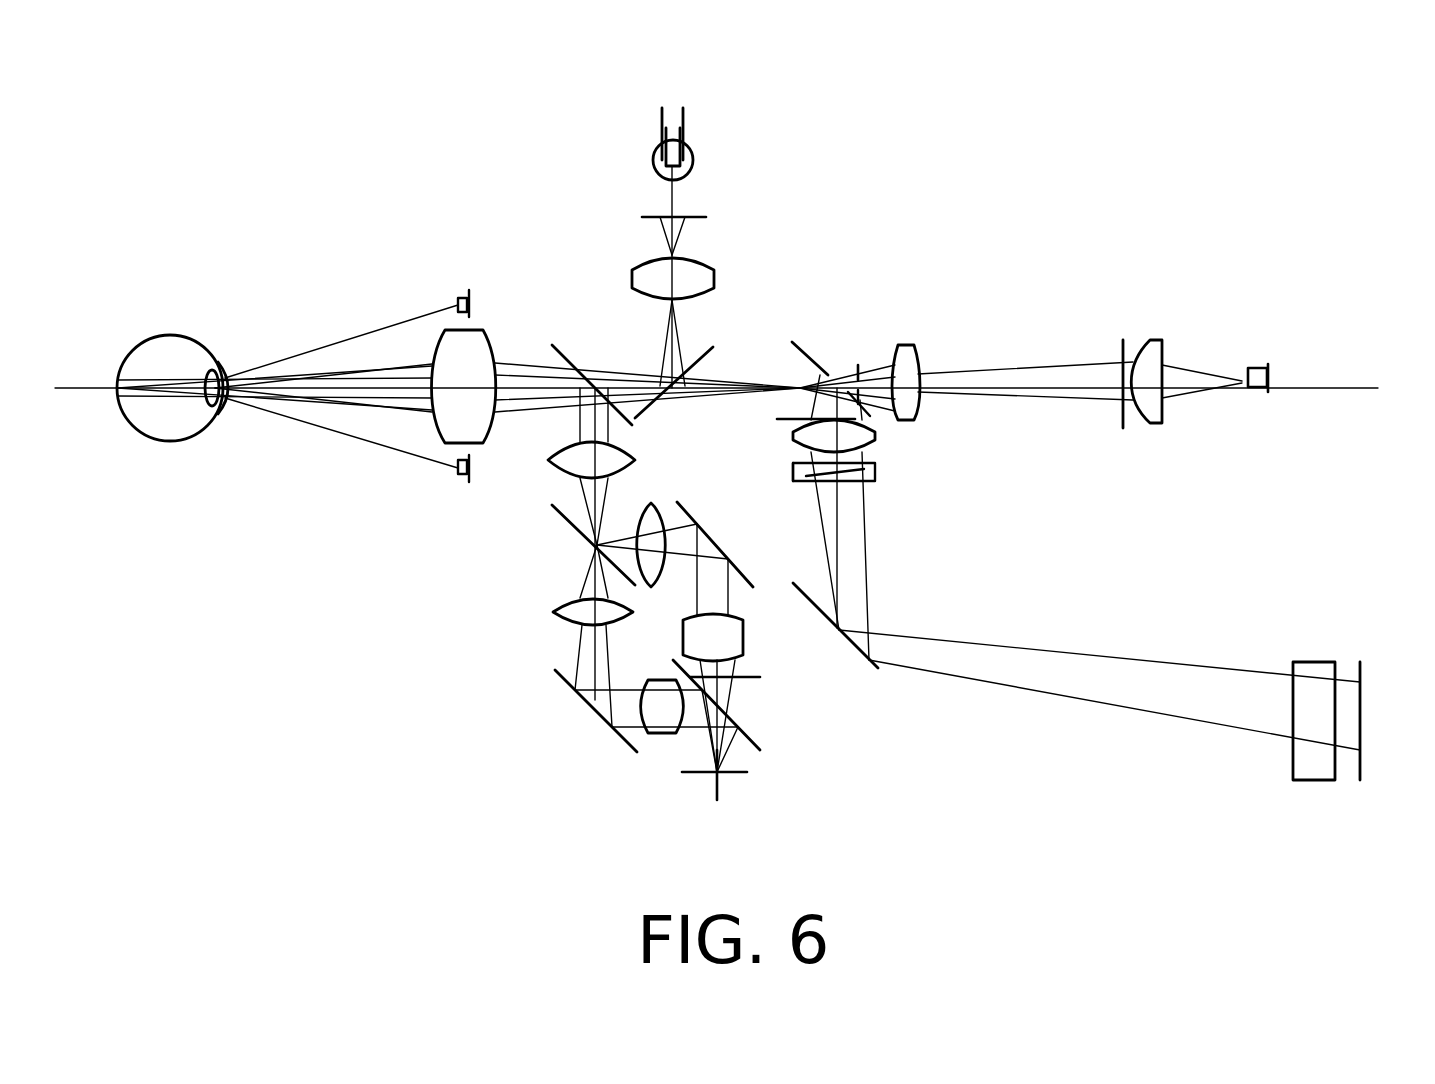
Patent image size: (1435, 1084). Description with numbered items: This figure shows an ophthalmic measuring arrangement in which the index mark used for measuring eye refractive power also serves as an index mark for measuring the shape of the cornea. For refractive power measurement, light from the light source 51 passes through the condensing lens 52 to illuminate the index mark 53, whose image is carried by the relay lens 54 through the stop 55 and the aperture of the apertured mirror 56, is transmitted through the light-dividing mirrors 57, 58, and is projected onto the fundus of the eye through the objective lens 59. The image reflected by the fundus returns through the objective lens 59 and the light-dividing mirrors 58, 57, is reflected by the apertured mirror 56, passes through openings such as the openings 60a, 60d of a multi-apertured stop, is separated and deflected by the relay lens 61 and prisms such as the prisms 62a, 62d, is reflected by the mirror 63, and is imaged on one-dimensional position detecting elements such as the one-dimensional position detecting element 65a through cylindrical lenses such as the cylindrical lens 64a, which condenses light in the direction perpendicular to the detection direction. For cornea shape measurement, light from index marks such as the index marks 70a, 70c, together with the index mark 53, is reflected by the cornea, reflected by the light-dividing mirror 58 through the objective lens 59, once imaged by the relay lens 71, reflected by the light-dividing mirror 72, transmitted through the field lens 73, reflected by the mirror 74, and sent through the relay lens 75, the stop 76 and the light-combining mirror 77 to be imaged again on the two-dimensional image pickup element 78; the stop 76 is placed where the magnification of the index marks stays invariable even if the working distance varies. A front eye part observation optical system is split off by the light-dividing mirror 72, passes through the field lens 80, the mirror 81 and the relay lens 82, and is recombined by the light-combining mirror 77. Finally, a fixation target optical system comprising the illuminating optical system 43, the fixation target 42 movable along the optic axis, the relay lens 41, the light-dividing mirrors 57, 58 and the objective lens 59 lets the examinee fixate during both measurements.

The relay lens 41 is at (714, 273).
The fixation target 42 is at (700, 217).
The illuminating optical system 43 is at (693, 163).
The light source 51 is at (1256, 368).
The condensing lens 52 is at (1152, 352).
The index mark for measuring the eye refractive power 53 is at (1121, 352).
The relay lens 54 is at (902, 360).
The stop 55 is at (858, 368).
The apertured mirror 56 is at (820, 355).
The light-dividing mirror 57 is at (705, 352).
The light-dividing mirror 58 is at (560, 352).
The objective lens 59 is at (484, 350).
The opening 60a is at (866, 410).
The opening 60d is at (790, 416).
The relay lens 61 is at (800, 440).
The prism 62a is at (875, 473).
The prism 62d is at (793, 476).
The mirror 63 is at (855, 675).
The cylindrical lens 64a is at (1318, 780).
The one-dimensional position detecting element 65a is at (1362, 780).
The index mark 70a is at (466, 292).
The index mark 70c is at (466, 482).
The relay lens 71 is at (625, 458).
The light-dividing mirror 72 is at (568, 520).
The field lens 73 is at (652, 510).
The mirror 74 is at (748, 578).
The relay lens 75 is at (735, 640).
The stop 76 is at (752, 677).
The light-combining mirror 77 is at (750, 740).
The two-dimensional image pickup element 78 is at (730, 772).
The field lens 80 is at (563, 605).
The mirror 81 is at (600, 718).
The relay lens 82 is at (660, 732).